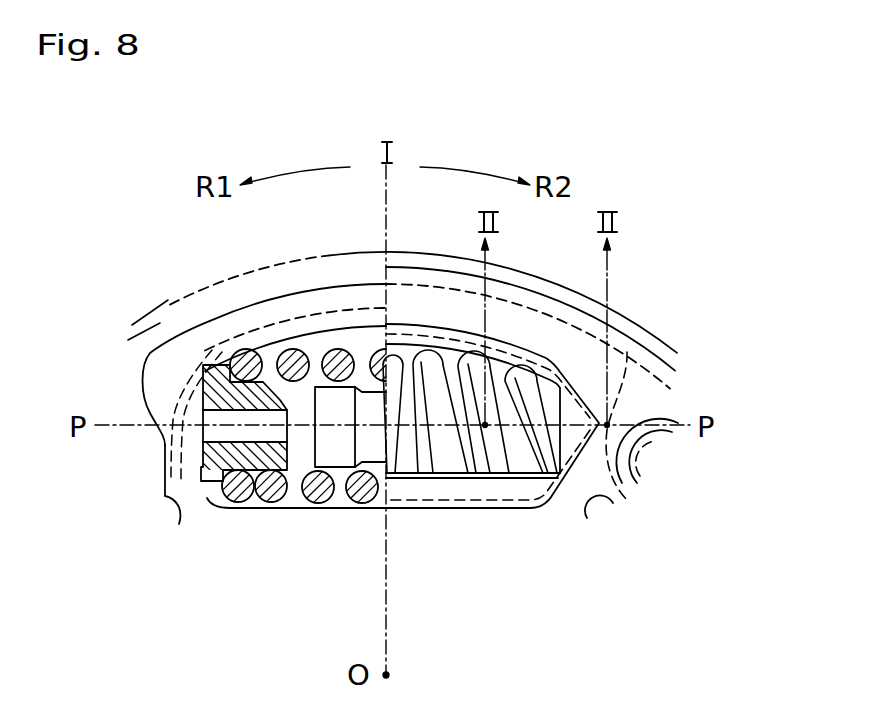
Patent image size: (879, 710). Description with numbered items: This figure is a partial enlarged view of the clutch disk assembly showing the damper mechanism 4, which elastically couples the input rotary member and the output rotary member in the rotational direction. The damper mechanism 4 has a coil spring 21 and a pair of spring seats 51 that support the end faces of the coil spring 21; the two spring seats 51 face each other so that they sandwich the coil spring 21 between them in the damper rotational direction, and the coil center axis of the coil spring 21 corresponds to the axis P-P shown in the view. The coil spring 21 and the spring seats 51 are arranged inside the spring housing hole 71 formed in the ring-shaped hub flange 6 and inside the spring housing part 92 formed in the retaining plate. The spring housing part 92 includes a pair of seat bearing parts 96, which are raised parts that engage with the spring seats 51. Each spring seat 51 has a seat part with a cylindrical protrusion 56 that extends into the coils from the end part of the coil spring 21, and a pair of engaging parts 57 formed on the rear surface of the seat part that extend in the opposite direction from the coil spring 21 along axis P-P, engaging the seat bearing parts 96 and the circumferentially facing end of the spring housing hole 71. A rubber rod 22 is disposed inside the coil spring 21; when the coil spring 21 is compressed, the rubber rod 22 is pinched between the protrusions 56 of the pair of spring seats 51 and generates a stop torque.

The damper mechanism 4 is at (652, 297).
The hub flange 6 is at (223, 330).
The spring seat 51 is at (213, 358).
The engaging parts 57 is at (202, 434).
The cylindrical protrusion 56 is at (300, 443).
The rubber rod 22 is at (366, 400).
The spring housing hole 71 is at (330, 345).
The coil spring 21 is at (308, 498).
The spring housing part 92 is at (543, 348).
The seat bearing part 96 is at (568, 440).